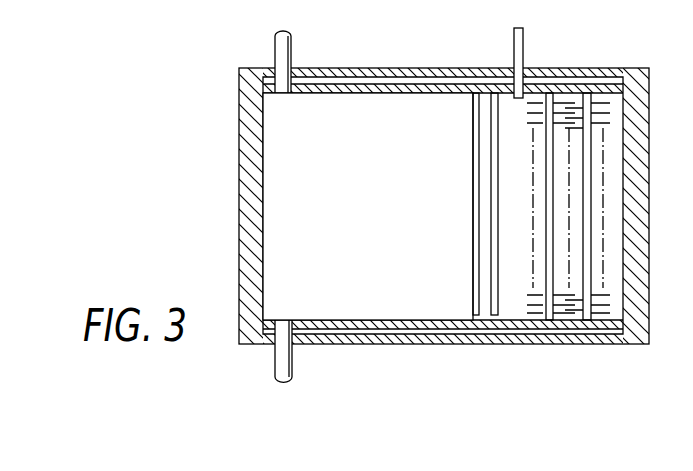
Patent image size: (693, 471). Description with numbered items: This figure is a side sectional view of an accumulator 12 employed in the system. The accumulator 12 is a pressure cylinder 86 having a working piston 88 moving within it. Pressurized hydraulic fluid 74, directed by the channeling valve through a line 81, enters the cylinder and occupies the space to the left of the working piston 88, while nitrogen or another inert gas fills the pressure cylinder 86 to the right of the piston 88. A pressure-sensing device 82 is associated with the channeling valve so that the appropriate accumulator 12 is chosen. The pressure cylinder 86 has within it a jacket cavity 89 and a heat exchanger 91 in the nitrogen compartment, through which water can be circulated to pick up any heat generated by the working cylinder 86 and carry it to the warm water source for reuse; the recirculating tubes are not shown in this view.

The accumulator 12 is at (444, 183).
The hydraulic fluid 74 is at (292, 223).
The line 81 is at (292, 54).
The pressure-sensing device 82 is at (514, 33).
The pressure cylinder 86 is at (422, 70).
The working piston 88 is at (473, 243).
The jacket cavity 89 is at (368, 76).
The heat exchanger 91 is at (592, 193).